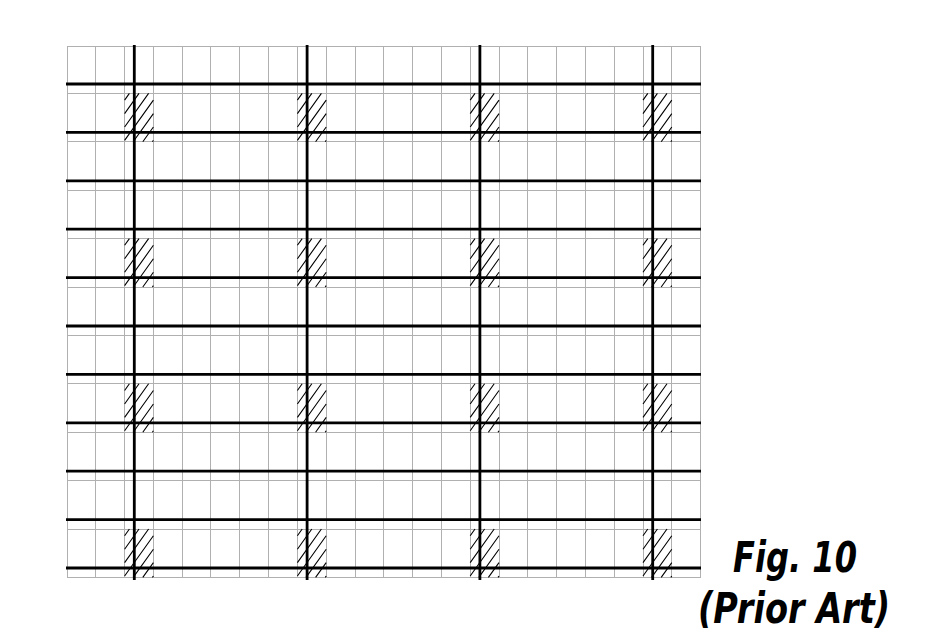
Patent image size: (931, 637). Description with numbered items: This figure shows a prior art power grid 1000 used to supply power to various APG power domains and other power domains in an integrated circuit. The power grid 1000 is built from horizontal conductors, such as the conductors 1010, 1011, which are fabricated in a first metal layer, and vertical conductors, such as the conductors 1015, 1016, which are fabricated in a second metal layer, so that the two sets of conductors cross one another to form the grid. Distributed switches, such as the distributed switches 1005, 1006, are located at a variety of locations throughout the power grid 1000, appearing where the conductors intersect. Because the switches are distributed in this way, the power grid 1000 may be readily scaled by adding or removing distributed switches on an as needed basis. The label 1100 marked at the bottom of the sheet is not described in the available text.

The power grid 1000 is at (741, 30).
The distributed switch 1005 is at (125, 112).
The distributed switch 1006 is at (125, 265).
The horizontal conductor 1010 is at (701, 84).
The horizontal conductor 1011 is at (701, 132).
The vertical conductor 1015 is at (653, 46).
The vertical conductor 1016 is at (480, 46).
The adjacent array region 1100 is at (78, 630).